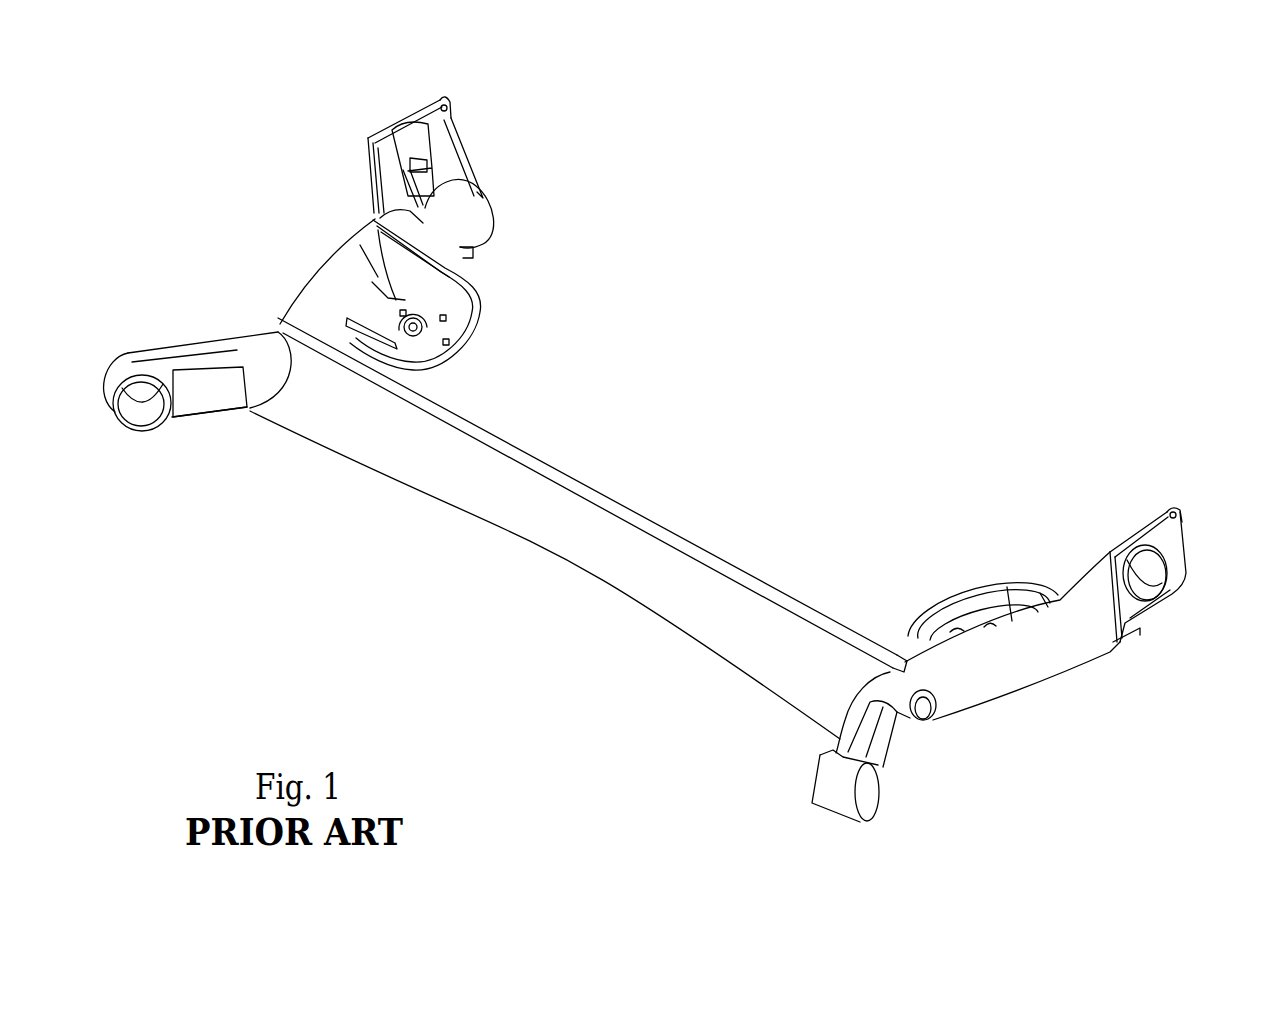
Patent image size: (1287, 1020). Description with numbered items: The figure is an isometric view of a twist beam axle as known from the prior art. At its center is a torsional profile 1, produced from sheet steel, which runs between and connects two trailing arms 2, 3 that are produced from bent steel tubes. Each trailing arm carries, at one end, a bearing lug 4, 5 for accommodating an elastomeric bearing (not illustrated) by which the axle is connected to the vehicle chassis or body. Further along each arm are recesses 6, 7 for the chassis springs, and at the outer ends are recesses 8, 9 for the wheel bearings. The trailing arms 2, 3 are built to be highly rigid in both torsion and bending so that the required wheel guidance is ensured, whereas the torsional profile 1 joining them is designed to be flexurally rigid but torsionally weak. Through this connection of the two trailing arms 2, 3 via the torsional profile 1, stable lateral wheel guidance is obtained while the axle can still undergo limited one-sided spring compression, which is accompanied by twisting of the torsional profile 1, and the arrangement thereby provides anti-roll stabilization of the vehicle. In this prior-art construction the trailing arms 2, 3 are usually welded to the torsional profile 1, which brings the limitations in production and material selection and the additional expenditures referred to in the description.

The torsional profile 1 is at (482, 462).
The trailing arm 2 is at (335, 295).
The trailing arm 3 is at (1018, 667).
The bearing lug 4 is at (143, 413).
The bearing lug 5 is at (815, 777).
The recess for chassis spring 6 is at (392, 298).
The recess for chassis spring 7 is at (965, 621).
The recess for wheel bearing 8 is at (408, 155).
The recess for wheel bearing 9 is at (1158, 575).